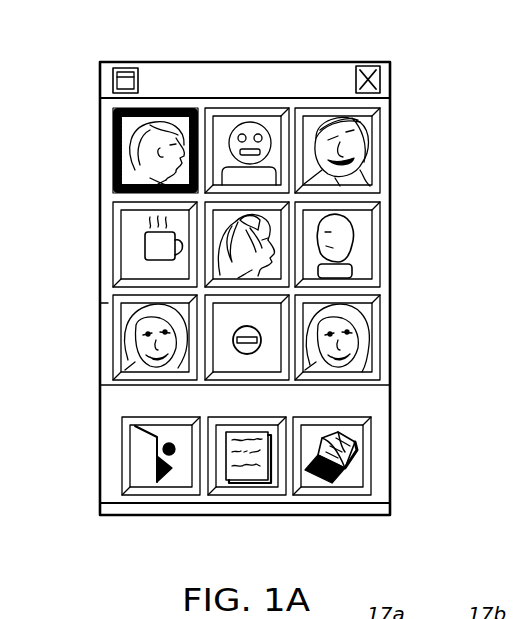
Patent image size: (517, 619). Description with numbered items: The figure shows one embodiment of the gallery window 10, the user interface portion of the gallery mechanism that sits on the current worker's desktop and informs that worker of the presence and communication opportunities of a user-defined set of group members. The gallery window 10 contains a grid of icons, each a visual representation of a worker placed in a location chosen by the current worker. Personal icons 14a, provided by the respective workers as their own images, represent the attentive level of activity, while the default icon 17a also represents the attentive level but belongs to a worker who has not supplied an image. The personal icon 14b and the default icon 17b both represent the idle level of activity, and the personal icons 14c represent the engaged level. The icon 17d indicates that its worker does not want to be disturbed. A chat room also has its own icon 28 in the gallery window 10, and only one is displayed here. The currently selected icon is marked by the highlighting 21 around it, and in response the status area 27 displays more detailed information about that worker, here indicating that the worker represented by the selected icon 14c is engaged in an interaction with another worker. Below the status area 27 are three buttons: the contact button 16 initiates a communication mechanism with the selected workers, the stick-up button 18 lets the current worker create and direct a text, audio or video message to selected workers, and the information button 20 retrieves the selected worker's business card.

The gallery window 10 is at (165, 62).
The highlighting 21 is at (112, 130).
The icon 14c is at (135, 189).
The icon 17a is at (277, 108).
The icon 14b is at (378, 183).
The chat room icon 28 is at (145, 245).
The icon 17b is at (378, 268).
The icon 14a is at (113, 372).
The icon 17d is at (282, 376).
The status area 27 is at (378, 412).
The contact button 16 is at (183, 488).
The stick-up button 18 is at (265, 488).
The information button 20 is at (325, 486).